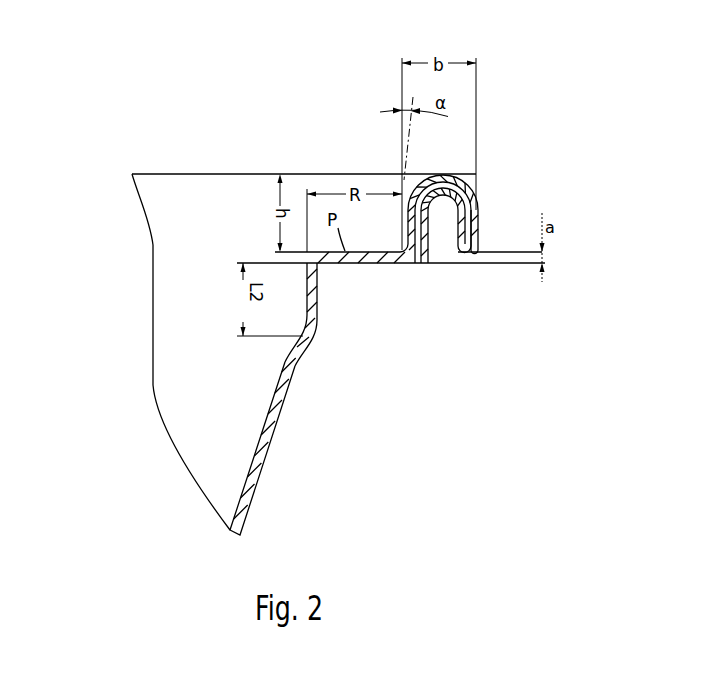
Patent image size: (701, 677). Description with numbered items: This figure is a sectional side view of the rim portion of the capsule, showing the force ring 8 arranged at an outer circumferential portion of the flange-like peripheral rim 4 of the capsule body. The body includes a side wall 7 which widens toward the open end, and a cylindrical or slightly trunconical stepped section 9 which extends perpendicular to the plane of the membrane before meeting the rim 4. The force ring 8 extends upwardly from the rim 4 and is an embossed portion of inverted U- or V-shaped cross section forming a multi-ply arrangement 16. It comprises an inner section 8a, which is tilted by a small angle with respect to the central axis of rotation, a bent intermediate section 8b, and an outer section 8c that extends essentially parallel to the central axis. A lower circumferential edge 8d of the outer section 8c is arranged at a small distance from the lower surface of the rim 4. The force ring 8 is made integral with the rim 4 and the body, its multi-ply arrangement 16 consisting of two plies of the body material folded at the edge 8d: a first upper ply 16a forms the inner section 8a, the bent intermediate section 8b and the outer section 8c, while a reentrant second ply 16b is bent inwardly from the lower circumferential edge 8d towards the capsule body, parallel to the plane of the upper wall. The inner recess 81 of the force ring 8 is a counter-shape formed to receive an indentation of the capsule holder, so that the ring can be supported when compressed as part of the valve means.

The peripheral rim 4 is at (348, 264).
The side wall 7 is at (273, 431).
The force ring 8 is at (441, 212).
The inner section 8a is at (404, 231).
The bent intermediate section 8b is at (436, 172).
The outer section 8c is at (481, 233).
The lower circumferential edge 8d is at (461, 252).
The cylindrical or slightly trunconical section 9 is at (318, 313).
The multi-ply arrangement 16 is at (493, 172).
The first upper ply 16a is at (475, 158).
The reentrant second ply 16b is at (480, 183).
The inner recess 81 is at (433, 236).